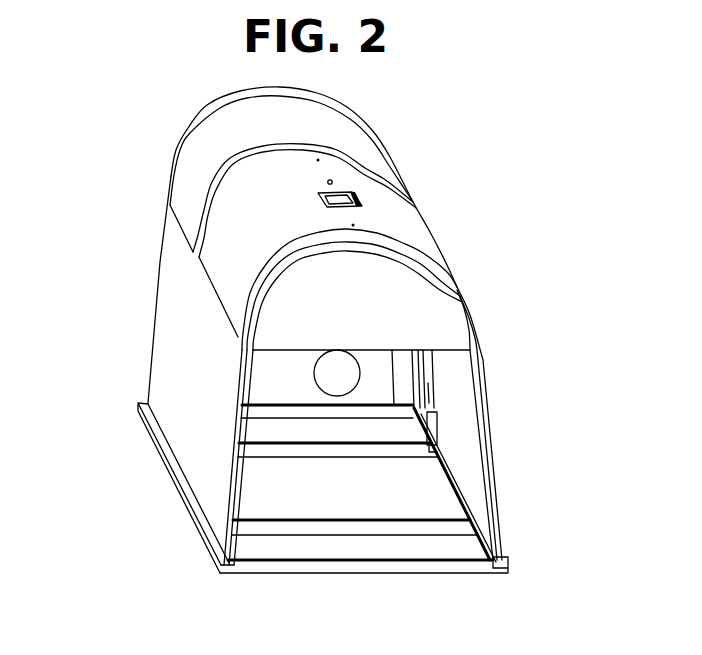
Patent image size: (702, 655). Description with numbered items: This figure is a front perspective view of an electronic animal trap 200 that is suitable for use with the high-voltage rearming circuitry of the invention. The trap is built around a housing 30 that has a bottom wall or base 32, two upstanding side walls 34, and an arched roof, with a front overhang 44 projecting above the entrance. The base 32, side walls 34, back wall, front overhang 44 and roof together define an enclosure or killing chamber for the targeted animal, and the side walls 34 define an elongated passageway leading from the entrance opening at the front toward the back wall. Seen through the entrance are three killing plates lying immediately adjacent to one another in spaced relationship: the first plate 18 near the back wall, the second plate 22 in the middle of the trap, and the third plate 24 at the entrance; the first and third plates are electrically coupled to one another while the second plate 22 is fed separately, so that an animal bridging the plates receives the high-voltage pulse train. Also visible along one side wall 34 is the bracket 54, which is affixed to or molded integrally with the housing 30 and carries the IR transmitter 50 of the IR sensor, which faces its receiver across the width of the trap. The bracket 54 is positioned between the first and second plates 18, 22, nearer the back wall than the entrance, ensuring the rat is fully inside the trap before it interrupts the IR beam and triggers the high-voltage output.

The electronic animal trap 200 is at (450, 165).
The housing 30 is at (170, 150).
The side walls 34 is at (168, 283).
The front overhang 44 is at (425, 294).
The bracket 54 is at (430, 390).
The IR transmitter 50 is at (433, 427).
The first plate 18 is at (303, 430).
The second plate 22 is at (375, 503).
The third plate 24 is at (448, 548).
The bottom wall 32 is at (488, 568).